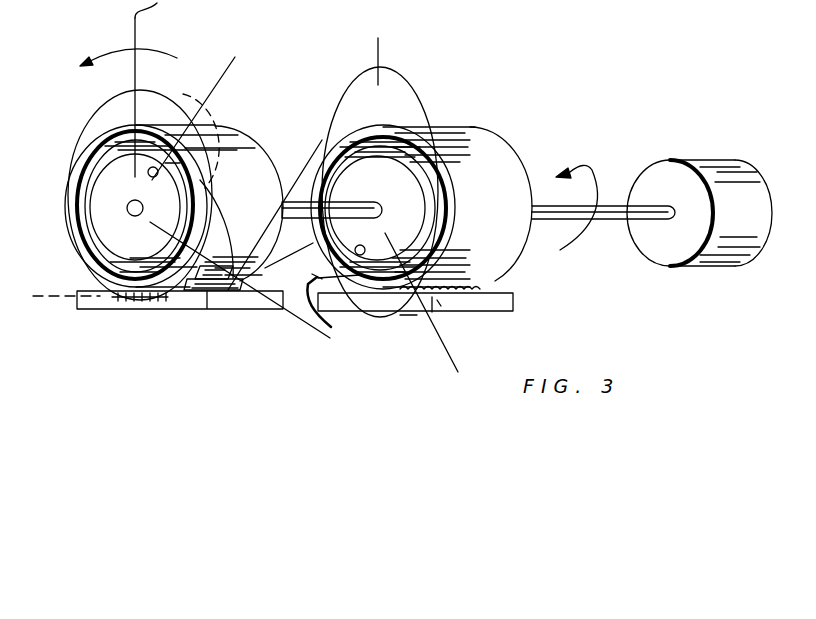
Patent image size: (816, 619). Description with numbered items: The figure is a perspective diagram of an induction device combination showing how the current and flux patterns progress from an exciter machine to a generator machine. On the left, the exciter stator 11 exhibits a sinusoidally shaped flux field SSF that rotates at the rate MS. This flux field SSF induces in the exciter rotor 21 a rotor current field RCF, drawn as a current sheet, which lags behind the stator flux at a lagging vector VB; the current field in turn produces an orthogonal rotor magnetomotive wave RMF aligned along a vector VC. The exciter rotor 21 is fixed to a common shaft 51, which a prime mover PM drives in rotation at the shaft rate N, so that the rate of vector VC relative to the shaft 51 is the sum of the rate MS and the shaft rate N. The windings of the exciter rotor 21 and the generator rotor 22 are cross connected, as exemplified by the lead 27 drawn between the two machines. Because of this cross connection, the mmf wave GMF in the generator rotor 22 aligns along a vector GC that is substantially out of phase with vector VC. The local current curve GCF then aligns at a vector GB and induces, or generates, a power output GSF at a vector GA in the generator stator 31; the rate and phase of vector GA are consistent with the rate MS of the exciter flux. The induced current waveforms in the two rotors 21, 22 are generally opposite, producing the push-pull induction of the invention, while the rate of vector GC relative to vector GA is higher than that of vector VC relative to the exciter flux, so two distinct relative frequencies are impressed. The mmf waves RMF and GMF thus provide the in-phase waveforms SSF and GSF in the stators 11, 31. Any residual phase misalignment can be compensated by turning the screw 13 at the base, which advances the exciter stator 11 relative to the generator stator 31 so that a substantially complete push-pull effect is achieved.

The exciter stator 11 is at (245, 137).
The screw 13 is at (143, 307).
The exciter rotor 21 is at (103, 203).
The generator rotor 22 is at (419, 196).
The lead 27 is at (276, 165).
The generator stator 31 is at (509, 158).
The common shaft 51 is at (611, 220).
The stator flux rotation rate MS is at (157, 50).
The sinusoidally shaped flux field SSF is at (105, 111).
The rotor current field RCF is at (205, 110).
The rotor magnetomotive wave RMF is at (230, 240).
The lagging vector VB is at (236, 56).
The rotor mmf vector VC is at (292, 318).
The generator rotor mmf vector GC is at (262, 270).
The generator rotor mmf wave GMF is at (342, 308).
The generator output vector GA is at (380, 50).
The generator power output flux field GSF is at (432, 66).
The local current curve GCF is at (451, 243).
The generator current vector GB is at (444, 339).
The shaft rate N is at (588, 177).
The prime mover PM is at (716, 166).